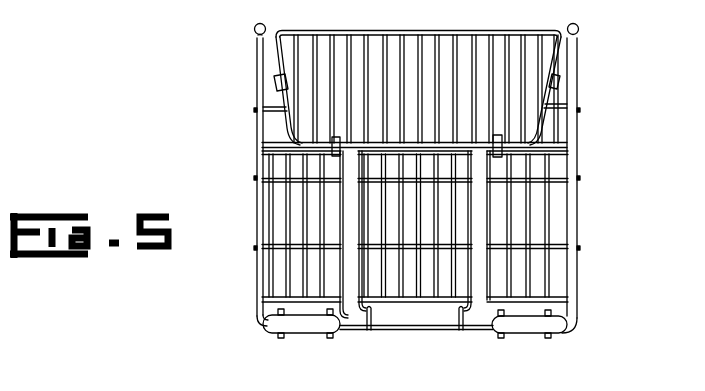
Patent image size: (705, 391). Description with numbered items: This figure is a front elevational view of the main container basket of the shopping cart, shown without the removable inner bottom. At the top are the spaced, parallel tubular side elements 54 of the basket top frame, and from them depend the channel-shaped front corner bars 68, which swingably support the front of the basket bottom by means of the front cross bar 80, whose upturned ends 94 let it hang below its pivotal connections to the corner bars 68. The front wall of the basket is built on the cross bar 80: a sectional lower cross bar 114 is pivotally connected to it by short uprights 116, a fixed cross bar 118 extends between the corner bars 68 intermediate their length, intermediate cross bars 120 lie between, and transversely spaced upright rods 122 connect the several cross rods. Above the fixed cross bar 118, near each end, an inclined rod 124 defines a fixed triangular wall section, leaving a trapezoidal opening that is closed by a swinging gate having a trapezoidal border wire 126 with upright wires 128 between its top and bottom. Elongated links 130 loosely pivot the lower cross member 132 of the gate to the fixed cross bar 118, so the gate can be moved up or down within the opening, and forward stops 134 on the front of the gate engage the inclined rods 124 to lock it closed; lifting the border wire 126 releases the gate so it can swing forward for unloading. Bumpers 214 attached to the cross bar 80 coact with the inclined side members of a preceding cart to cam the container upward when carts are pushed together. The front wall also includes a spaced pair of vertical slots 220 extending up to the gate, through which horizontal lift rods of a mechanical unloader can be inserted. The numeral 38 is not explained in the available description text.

The frame member 38 is at (6, 1).
The side elements 54 is at (576, 21).
The front corner bars 68 is at (574, 213).
The front cross bar 80 is at (428, 331).
The upturned ends 94 is at (263, 324).
The sectional lower cross bar 114 is at (456, 318).
The short uprights 116 is at (368, 332).
The fixed cross bar 118 is at (540, 152).
The intermediate cross bars 120 is at (538, 248).
The upright rods 122 is at (549, 236).
The inclined rod 124 is at (558, 137).
The trapezoidal border wire 126 is at (464, 28).
The upright wires 128 is at (312, 60).
The elongated links 130 is at (332, 150).
The lower cross member 132 is at (568, 103).
The forward stops 134 is at (554, 82).
The bumpers 214 is at (303, 330).
The vertical slots 220 is at (347, 312).